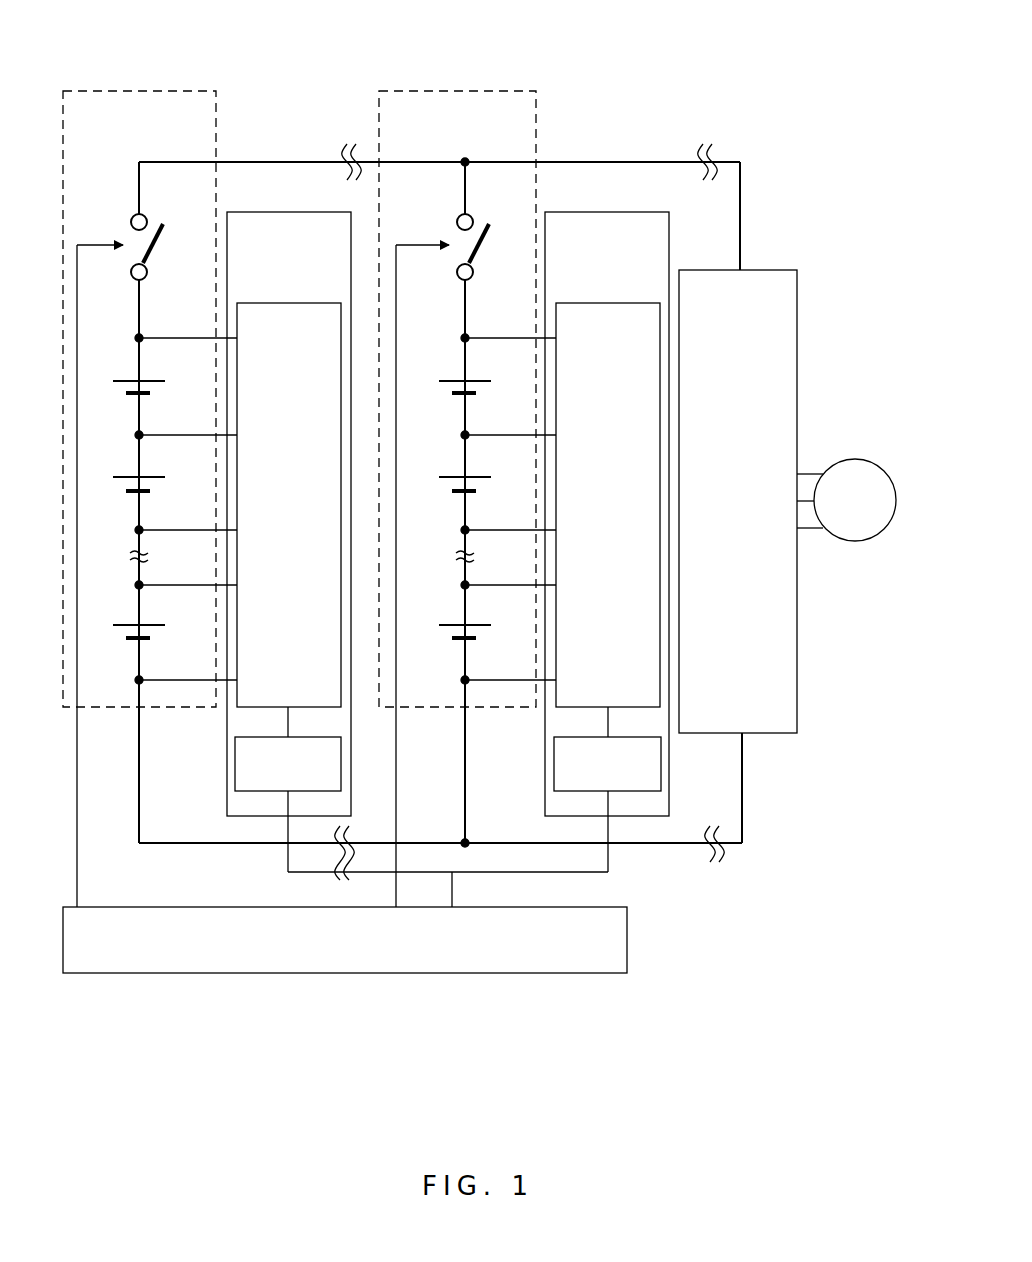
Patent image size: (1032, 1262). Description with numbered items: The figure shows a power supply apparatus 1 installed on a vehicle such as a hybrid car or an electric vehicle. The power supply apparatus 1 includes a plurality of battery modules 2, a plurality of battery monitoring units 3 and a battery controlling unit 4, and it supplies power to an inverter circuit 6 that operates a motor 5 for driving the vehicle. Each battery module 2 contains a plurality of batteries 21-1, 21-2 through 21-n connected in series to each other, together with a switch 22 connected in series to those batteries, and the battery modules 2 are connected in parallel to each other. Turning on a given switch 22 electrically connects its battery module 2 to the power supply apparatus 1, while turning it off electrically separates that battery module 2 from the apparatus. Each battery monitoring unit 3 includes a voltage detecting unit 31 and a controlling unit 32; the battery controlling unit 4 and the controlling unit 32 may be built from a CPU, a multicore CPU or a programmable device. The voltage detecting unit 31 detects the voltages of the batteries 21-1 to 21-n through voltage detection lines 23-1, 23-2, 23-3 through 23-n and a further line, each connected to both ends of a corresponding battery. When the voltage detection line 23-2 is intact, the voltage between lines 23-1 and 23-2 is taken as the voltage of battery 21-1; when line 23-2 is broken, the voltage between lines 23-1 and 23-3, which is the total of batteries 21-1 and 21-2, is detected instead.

The power supply apparatus 1 is at (523, 50).
The battery module 2 is at (139, 91).
The battery monitoring unit 3 is at (288, 211).
The battery controlling unit 4 is at (345, 975).
The motor 5 is at (852, 459).
The inverter circuit 6 is at (767, 269).
The battery 21-1 is at (125, 381).
The battery 21-2 is at (125, 476).
The battery 21-n is at (125, 623).
The switch 22 is at (123, 229).
The voltage detection line 23-1 is at (184, 337).
The voltage detection line 23-2 is at (184, 434).
The voltage detection line 23-3 is at (184, 529).
The voltage detection line 23-n is at (184, 584).
The voltage detecting unit 31 is at (302, 303).
The controlling unit 32 is at (235, 768).